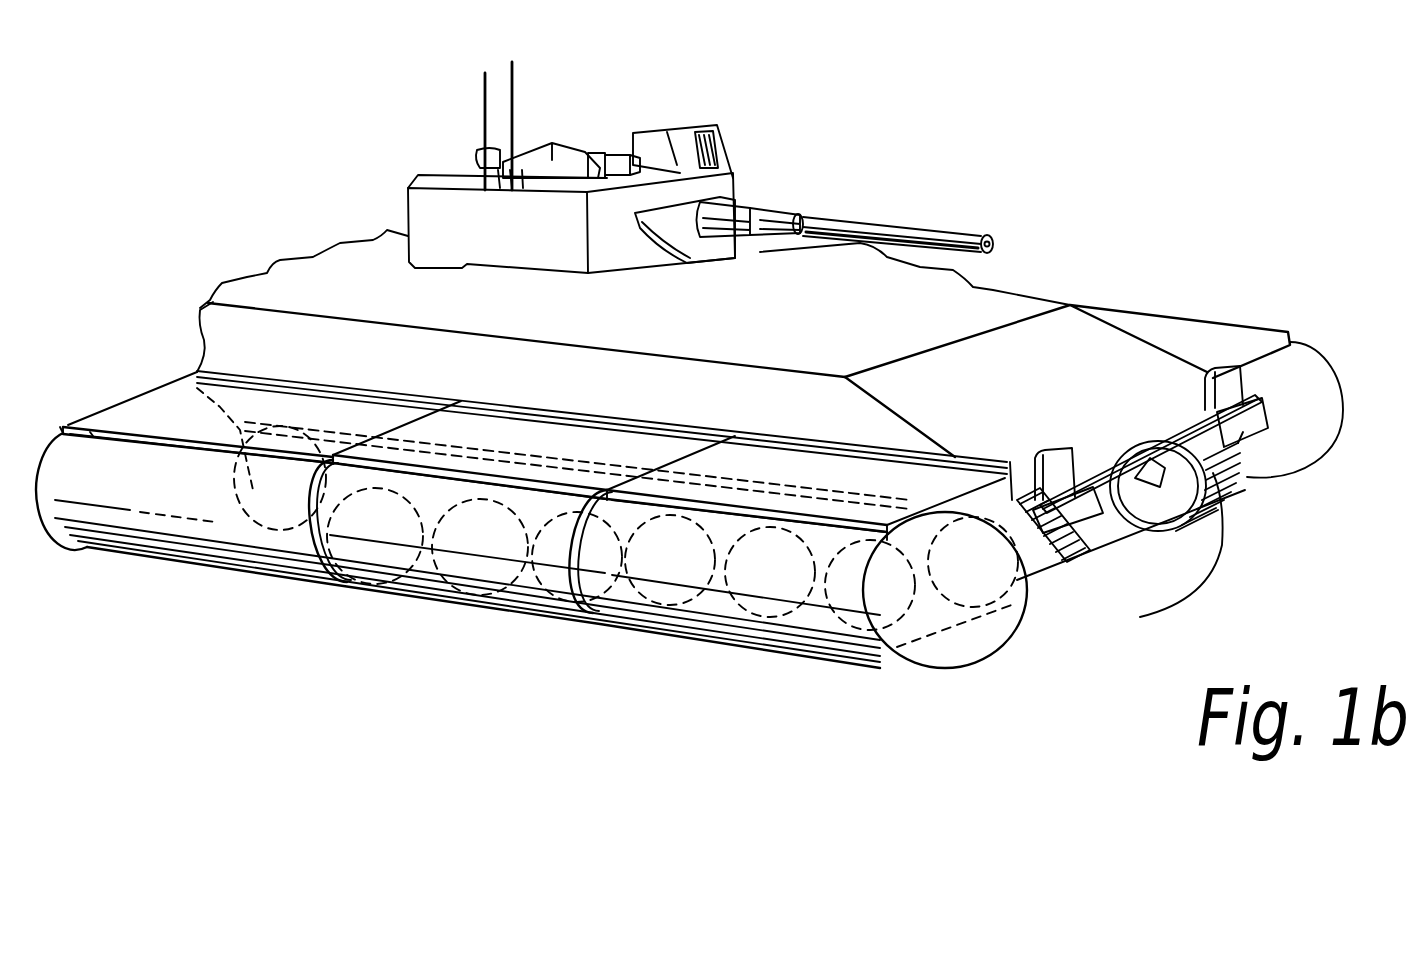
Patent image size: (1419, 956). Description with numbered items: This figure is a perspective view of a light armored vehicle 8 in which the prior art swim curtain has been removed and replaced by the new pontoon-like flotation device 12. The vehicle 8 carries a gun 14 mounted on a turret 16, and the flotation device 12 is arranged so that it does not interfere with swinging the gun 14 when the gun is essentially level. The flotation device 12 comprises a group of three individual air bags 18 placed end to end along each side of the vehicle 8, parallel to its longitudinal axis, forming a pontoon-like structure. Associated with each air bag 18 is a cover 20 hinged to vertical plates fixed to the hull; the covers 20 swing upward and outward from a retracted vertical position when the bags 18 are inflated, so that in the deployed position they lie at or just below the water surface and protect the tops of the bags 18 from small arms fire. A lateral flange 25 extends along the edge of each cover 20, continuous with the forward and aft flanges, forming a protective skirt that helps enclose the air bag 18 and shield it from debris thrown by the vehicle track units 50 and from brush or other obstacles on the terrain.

The light armored vehicle 8 is at (947, 303).
The flotation device 12 is at (108, 407).
The gun 14 is at (930, 233).
The turret 16 is at (740, 188).
The air bag 18 is at (217, 553).
The cover 20 is at (163, 400).
The lateral flange 25 is at (173, 445).
The track unit 50 is at (1165, 605).